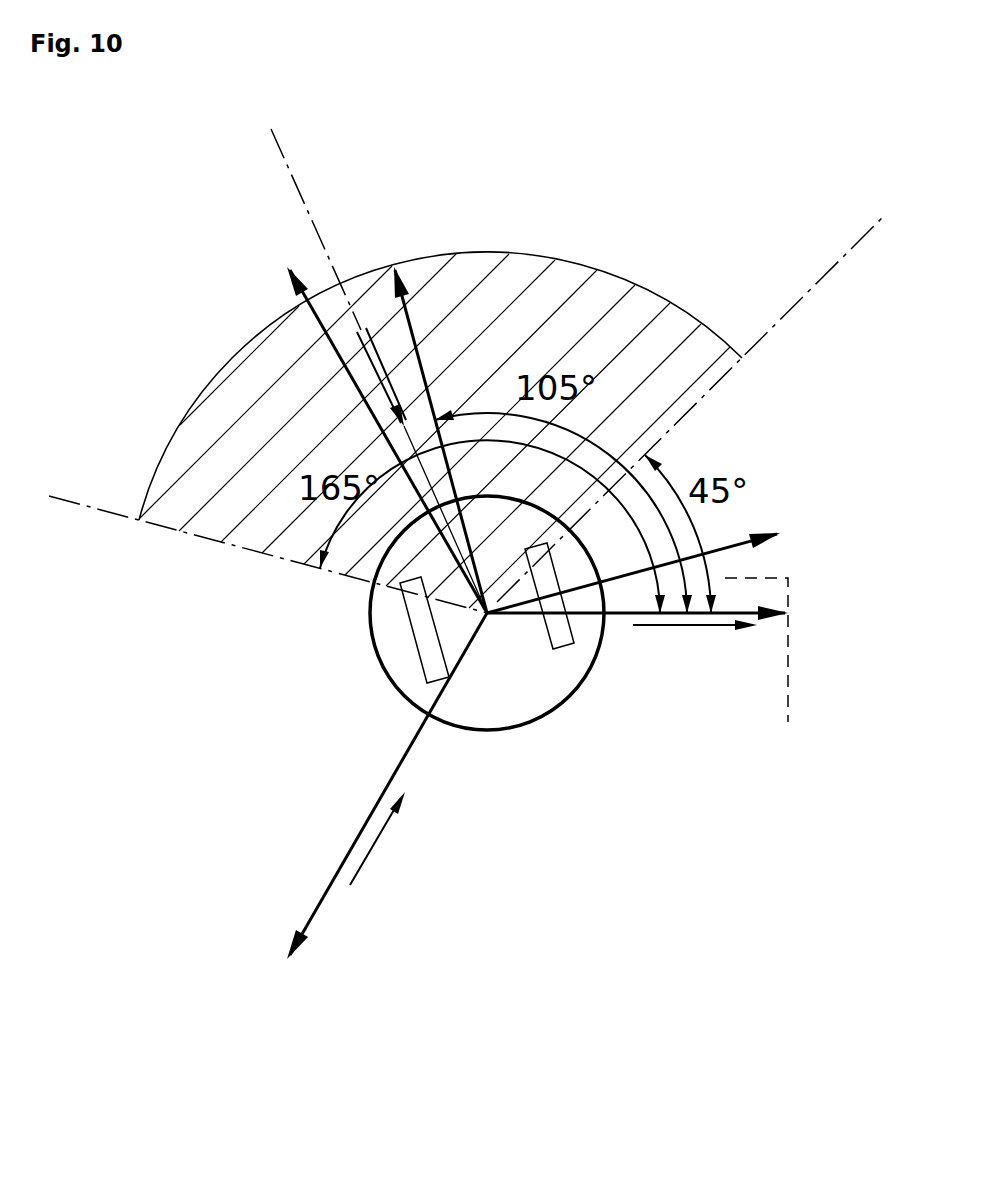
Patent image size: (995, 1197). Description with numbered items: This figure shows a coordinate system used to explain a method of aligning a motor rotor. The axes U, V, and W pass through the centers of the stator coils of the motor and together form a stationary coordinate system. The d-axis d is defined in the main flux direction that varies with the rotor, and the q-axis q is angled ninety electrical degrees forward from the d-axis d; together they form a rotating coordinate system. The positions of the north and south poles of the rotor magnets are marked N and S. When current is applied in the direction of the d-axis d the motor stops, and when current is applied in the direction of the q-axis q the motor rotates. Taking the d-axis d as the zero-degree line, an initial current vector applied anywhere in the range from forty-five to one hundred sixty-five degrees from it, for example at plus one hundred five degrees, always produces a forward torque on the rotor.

The U axis U is at (671, 650).
The V axis V is at (362, 404).
The W axis W is at (371, 832).
The d-axis d is at (664, 554).
The q-axis q is at (430, 406).
The N pole position N is at (598, 583).
The S pole position S is at (378, 649).